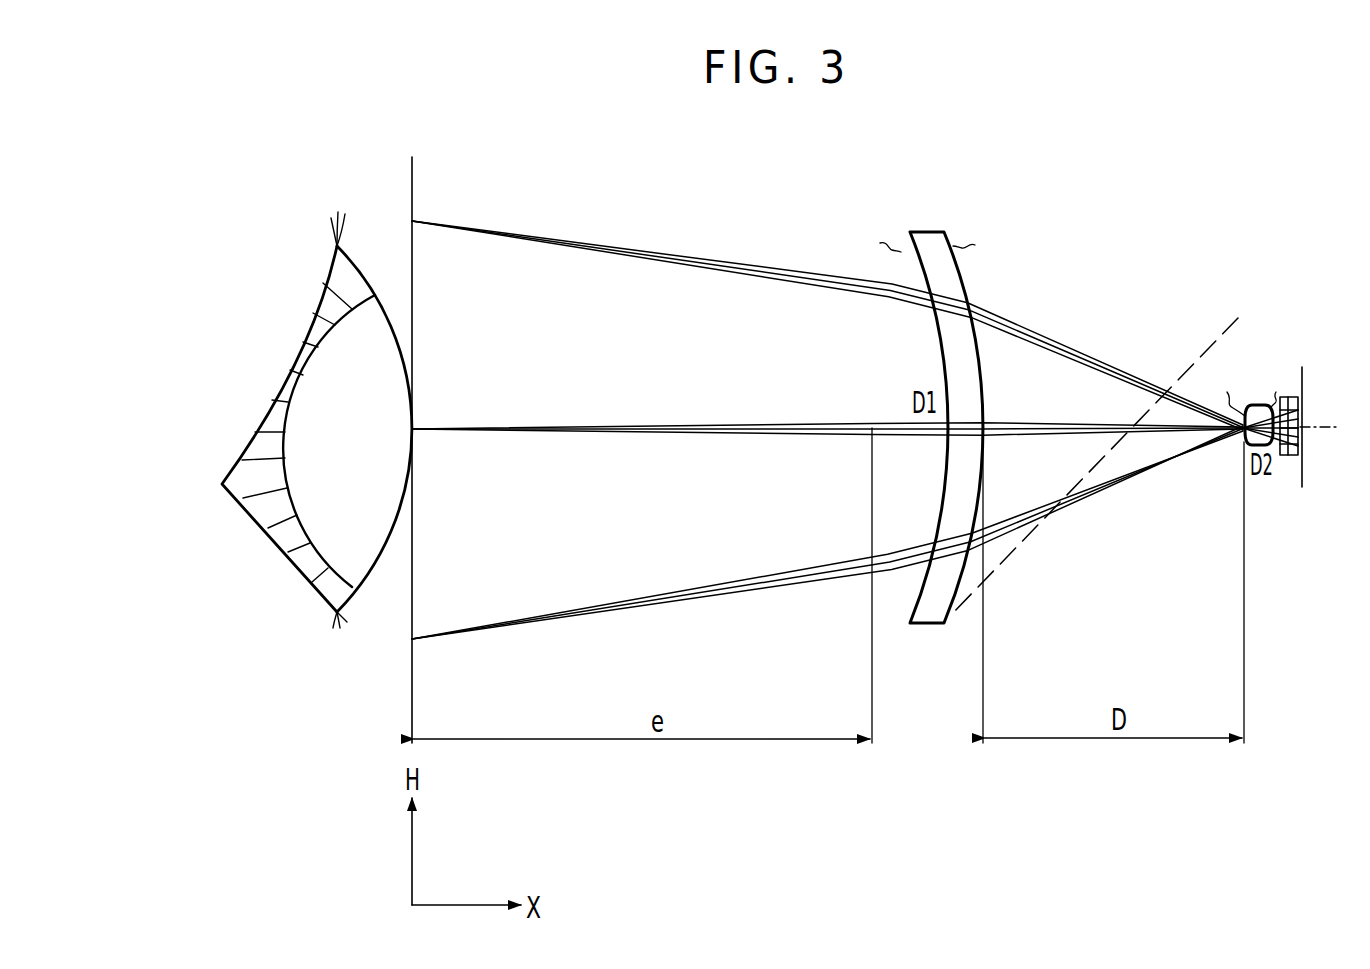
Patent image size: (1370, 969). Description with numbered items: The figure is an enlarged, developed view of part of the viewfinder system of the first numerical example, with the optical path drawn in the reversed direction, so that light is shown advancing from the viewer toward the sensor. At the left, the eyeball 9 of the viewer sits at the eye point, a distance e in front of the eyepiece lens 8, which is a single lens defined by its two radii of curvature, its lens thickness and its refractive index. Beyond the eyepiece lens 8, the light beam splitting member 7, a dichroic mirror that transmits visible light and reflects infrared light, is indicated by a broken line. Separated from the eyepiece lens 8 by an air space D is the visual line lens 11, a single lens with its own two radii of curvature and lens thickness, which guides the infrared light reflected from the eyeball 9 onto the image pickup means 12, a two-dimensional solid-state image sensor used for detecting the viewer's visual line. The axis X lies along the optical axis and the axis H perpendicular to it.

The light beam splitting member 7 is at (1207, 350).
The eyepiece lens 8 is at (925, 231).
The eyeball 9 is at (318, 294).
The visual line lens 11 is at (1258, 405).
The image pickup means 12 is at (1303, 400).